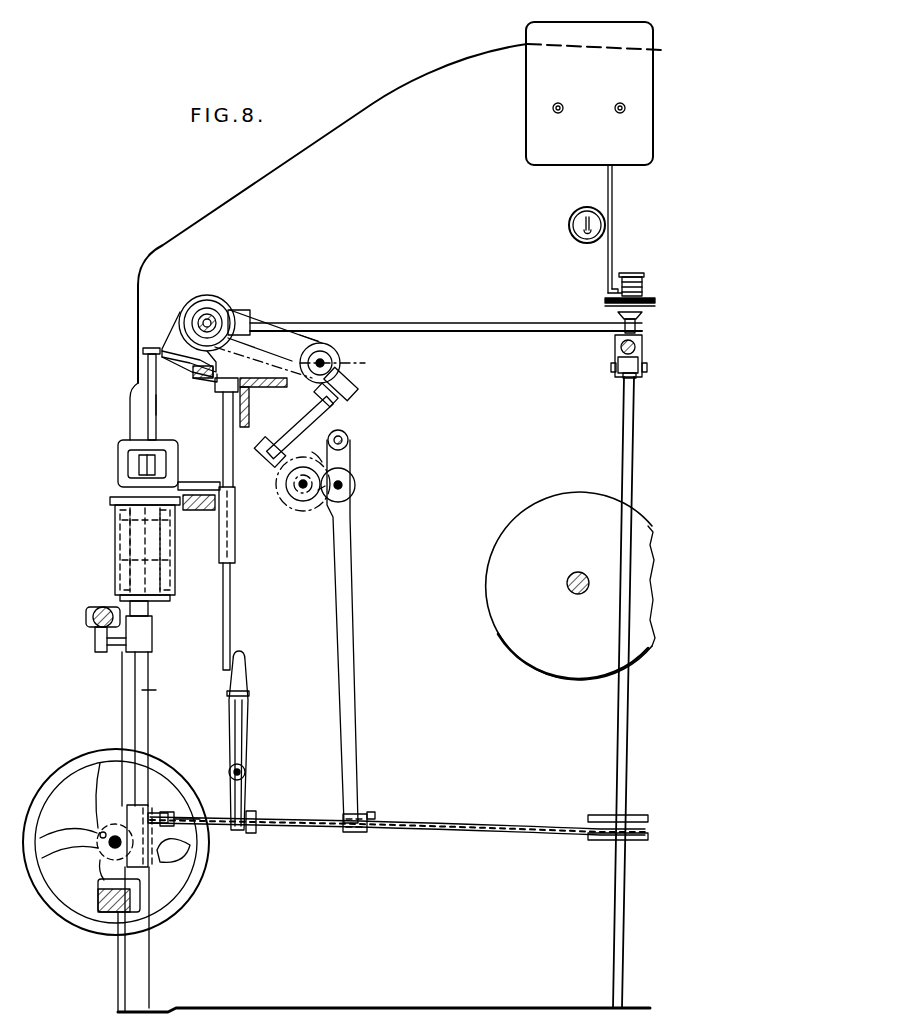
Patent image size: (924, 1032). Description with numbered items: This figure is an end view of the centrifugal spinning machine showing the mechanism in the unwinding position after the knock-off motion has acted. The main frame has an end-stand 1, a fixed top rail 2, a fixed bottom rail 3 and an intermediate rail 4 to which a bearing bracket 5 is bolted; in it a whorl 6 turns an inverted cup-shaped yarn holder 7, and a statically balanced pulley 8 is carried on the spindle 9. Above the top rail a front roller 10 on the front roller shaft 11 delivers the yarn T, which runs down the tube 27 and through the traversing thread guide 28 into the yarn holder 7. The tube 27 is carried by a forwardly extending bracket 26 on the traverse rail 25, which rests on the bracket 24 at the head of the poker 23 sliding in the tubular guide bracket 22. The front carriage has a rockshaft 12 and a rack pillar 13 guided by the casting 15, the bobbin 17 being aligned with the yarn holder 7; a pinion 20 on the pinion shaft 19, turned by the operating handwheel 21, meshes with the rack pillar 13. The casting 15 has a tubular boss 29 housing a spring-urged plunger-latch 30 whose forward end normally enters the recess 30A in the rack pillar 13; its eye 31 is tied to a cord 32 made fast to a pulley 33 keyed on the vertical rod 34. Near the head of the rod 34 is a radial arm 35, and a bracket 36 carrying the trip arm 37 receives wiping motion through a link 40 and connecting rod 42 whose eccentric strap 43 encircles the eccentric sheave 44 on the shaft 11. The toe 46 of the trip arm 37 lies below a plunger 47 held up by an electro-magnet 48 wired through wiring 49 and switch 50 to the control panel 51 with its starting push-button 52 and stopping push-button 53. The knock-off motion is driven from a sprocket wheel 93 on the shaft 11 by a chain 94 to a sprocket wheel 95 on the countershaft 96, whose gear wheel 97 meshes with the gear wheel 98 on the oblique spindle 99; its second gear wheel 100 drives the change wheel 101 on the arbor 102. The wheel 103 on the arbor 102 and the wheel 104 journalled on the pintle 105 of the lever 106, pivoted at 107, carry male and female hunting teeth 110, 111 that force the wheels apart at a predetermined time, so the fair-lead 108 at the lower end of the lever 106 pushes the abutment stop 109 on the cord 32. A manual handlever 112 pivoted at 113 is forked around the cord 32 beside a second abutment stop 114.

The end-stand 1 is at (138, 398).
The fixed top rail 2 is at (250, 398).
The fixed bottom rail 3 is at (108, 912).
The fixed intermediate rail 4 is at (200, 511).
The bearing bracket 5 is at (178, 466).
The whorl 6 is at (132, 463).
The yarn holder 7 is at (116, 527).
The statically balanced pulley 8 is at (548, 508).
The spindle 9 is at (572, 574).
The front roller 10 is at (182, 331).
The front roller shaft 11 is at (193, 318).
The rockshaft 12 is at (100, 610).
The rack pillar 13 is at (146, 722).
The casting 15 is at (140, 963).
The bobbin 17 is at (150, 556).
The pinion shaft 19 is at (110, 848).
The pinion 20 is at (84, 826).
The operating handwheel 21 is at (58, 880).
The tubular guide bracket 22 is at (236, 546).
The poker 23 is at (231, 601).
The forwardly extending bracket 24 is at (228, 394).
The traverse rail 25 is at (205, 383).
The forwardly extending bracket 26 is at (198, 372).
The tube 27 is at (148, 420).
The traversing thread guide 28 is at (112, 503).
The tubular boss 29 is at (158, 812).
The plunger-latch 30 is at (172, 812).
The recess 30A is at (150, 690).
The eye 31 is at (172, 826).
The cord 32 is at (418, 836).
The pulley 33 is at (613, 815).
The vertical rod 34 is at (620, 757).
The radial arm 35 is at (628, 379).
The bracket 36 is at (614, 361).
The trip arm 37 is at (623, 318).
The link 40 is at (615, 347).
The connecting rod 42 is at (428, 320).
The eccentric strap 43 is at (255, 325).
The eccentric sheave 44 is at (210, 300).
The toe 46 is at (626, 309).
The plunger 47 is at (622, 299).
The electro-magnet 48 is at (633, 273).
The wiring 49 is at (614, 242).
The switch 50 is at (569, 219).
The electric control panel 51 is at (545, 86).
The starting push-button 52 is at (556, 114).
The stopping push-button 53 is at (618, 114).
The sprocket wheel 93 is at (255, 335).
The chain 94 is at (290, 372).
The sprocket wheel 95 is at (318, 338).
The countershaft 96 is at (328, 361).
The gear wheel 97 is at (366, 364).
The gear wheel 98 is at (352, 389).
The obliquely disposed spindle 99 is at (317, 397).
The second gear wheel 100 is at (318, 412).
The change wheel 101 is at (278, 473).
The arbor 102 is at (300, 487).
The wheel 103 is at (292, 498).
The wheel 104 is at (356, 488).
The pintle 105 is at (343, 483).
The lever 106 is at (352, 603).
The pivot 107 is at (349, 436).
The fair-lead 108 is at (350, 833).
The abutment stop 109 is at (375, 816).
The male hunting teeth 110 is at (322, 496).
The female hunting teeth 111 is at (315, 447).
The handlever 112 is at (241, 737).
The pivot 113 is at (248, 772).
The second abutment stop 114 is at (256, 813).
The yarn T is at (154, 408).